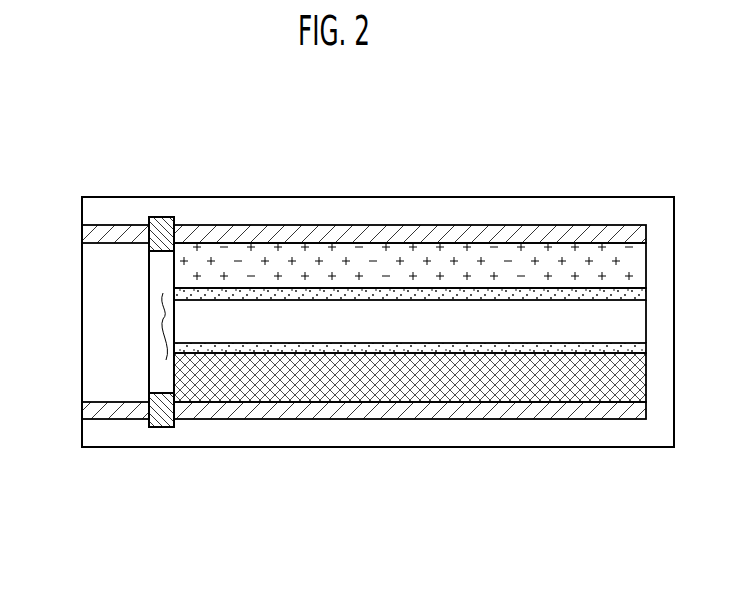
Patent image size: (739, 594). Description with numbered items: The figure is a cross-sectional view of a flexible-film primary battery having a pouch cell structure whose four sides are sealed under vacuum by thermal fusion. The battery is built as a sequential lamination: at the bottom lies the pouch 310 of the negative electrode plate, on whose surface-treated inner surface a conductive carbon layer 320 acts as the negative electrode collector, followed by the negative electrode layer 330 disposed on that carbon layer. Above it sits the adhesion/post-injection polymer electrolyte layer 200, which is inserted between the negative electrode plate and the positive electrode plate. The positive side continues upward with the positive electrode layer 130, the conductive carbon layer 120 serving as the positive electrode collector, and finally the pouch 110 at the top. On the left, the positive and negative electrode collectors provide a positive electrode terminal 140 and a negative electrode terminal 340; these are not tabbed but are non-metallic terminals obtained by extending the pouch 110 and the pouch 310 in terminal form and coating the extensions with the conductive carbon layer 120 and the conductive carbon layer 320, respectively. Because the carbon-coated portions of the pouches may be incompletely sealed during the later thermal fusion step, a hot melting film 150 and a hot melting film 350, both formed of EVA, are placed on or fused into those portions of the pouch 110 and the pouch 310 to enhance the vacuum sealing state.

The pouch 110 is at (302, 210).
The conductive carbon layer 120 is at (352, 237).
The positive electrode layer 130 is at (427, 267).
The positive electrode terminal 140 is at (356, 223).
The hot melting film 150 is at (159, 213).
The adhesion/post-injection polymer electrolyte layer 200 is at (163, 319).
The pouch 310 is at (423, 432).
The conductive carbon layer 320 is at (486, 407).
The negative electrode layer 330 is at (535, 383).
The negative electrode terminal 340 is at (355, 423).
The hot melting film 350 is at (158, 427).